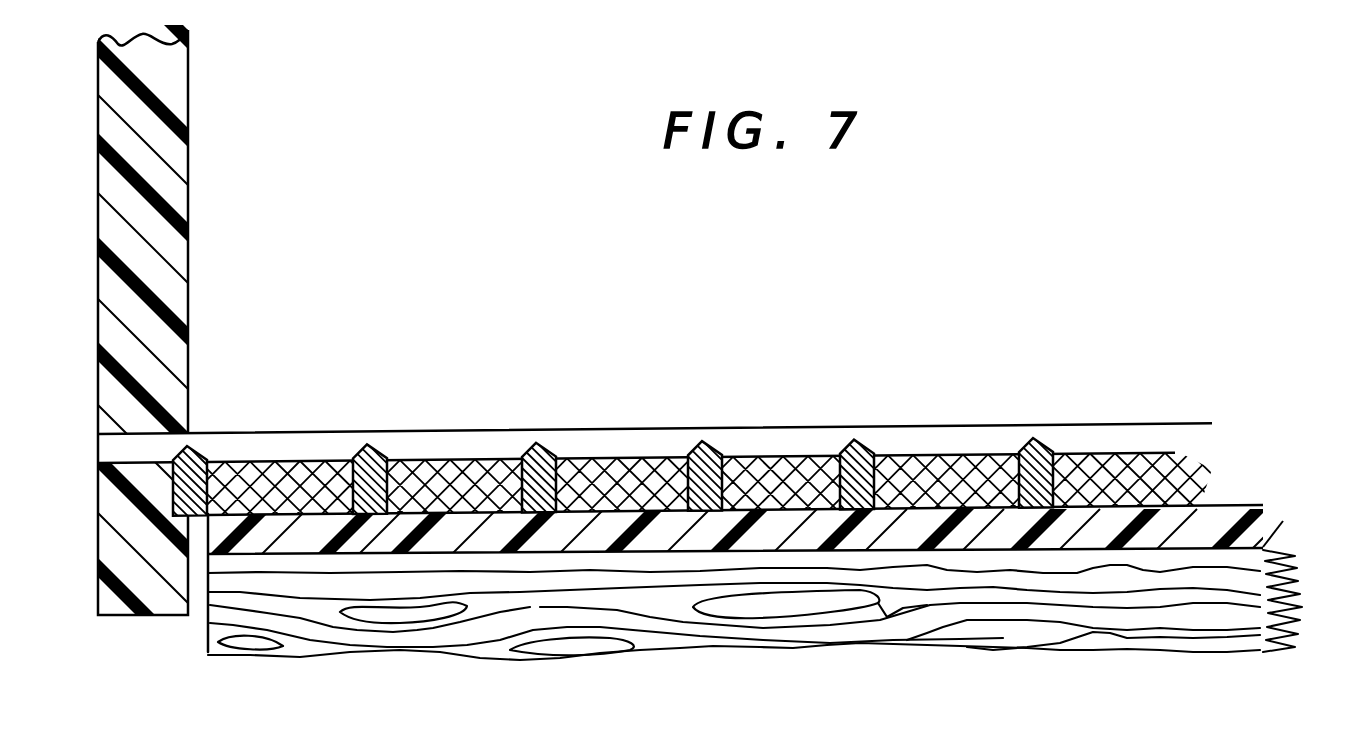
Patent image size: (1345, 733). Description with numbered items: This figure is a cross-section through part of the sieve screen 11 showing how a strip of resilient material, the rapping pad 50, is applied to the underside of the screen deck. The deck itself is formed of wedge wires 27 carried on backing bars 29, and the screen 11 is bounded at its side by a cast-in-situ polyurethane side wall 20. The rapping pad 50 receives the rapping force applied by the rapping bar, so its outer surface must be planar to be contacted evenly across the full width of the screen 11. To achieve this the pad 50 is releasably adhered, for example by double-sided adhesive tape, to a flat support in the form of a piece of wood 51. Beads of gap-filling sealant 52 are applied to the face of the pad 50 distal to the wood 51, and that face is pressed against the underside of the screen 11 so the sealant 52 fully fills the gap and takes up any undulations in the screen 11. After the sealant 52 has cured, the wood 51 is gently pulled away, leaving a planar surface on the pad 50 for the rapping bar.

The polyurethane side wall 20 is at (172, 94).
The wedge wire 27 is at (250, 442).
The sieve screen 11 is at (364, 447).
The sealant 52 is at (446, 470).
The backing bar 29 is at (590, 472).
The rapping pad 50 is at (1203, 523).
The piece of wood 51 is at (262, 632).